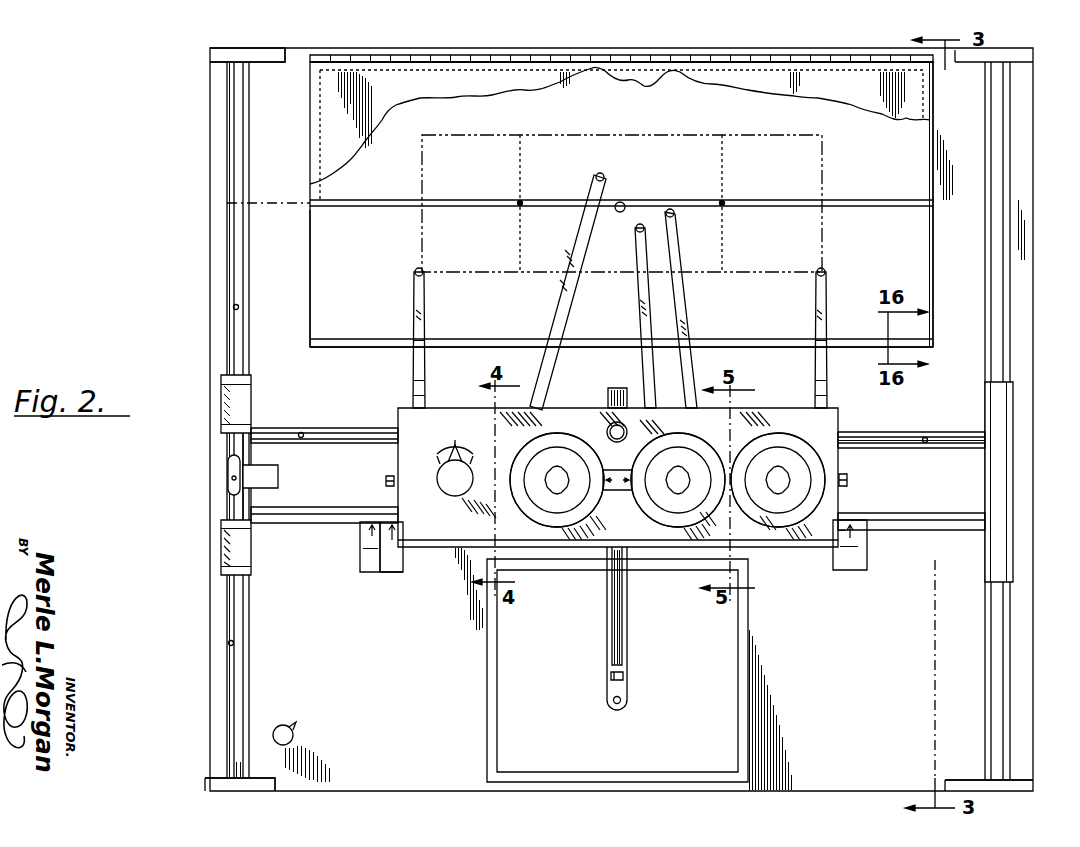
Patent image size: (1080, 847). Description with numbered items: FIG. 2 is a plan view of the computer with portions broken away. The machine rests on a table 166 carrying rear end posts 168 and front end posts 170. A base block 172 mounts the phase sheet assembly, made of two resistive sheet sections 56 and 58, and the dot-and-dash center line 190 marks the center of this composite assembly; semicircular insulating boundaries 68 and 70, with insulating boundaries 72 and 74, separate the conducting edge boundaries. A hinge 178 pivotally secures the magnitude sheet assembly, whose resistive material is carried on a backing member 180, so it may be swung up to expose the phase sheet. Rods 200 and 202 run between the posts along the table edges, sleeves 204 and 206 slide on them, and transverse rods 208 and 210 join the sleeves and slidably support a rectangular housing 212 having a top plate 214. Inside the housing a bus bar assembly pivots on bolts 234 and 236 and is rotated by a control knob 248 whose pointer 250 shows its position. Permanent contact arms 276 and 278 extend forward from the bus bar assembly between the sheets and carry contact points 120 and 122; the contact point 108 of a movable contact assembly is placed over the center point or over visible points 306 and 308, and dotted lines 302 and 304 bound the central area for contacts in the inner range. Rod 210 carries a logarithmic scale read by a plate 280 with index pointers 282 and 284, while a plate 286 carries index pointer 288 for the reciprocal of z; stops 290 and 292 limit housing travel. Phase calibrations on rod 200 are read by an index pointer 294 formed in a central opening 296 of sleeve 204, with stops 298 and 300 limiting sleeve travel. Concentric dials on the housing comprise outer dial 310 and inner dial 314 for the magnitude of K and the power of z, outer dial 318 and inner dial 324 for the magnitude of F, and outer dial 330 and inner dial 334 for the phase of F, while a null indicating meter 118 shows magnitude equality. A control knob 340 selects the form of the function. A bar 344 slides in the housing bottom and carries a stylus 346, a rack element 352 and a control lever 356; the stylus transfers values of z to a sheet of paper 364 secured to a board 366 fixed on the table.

The resistive sheet section 56 is at (912, 145).
The resistive sheet section 58 is at (924, 259).
The semicircular insulating boundary 68 is at (622, 70).
The semicircular insulating boundary 70 is at (620, 202).
The insulating boundary 72 is at (621, 223).
The insulating boundary 74 is at (634, 338).
The contact point 108 is at (600, 174).
The null indicating meter 118 is at (626, 432).
The permanent contact element 120 is at (414, 278).
The permanent contact element 122 is at (826, 274).
The table 166 is at (224, 100).
The rear end posts 168 is at (232, 54).
The front end posts 170 is at (216, 786).
The base block 172 is at (318, 232).
The hinge 178 is at (482, 60).
The backing member 180 is at (326, 96).
The center line 190 is at (316, 206).
The rod 200 is at (230, 252).
The rod 202 is at (1010, 326).
The sleeve 204 is at (224, 511).
The sleeve 206 is at (1012, 510).
The transverse rod 208 is at (898, 448).
The transverse rod 210 is at (962, 514).
The rectangular housing 212 is at (382, 413).
The top plate 214 is at (447, 550).
The pivot bolt 234 is at (386, 483).
The pivot bolt 236 is at (846, 482).
The control knob 248 is at (452, 490).
The pointer 250 is at (450, 454).
The permanent contact arm 276 is at (413, 356).
The permanent contact arm 278 is at (815, 364).
The plate 280 is at (398, 576).
The index pointer 282 is at (376, 575).
The second index pointer 284 is at (362, 545).
The plate 286 is at (850, 572).
The index pointer 288 is at (855, 532).
The stop 290 is at (303, 432).
The stop 292 is at (926, 437).
The index pointer 294 is at (236, 478).
The central opening 296 is at (224, 466).
The stop 298 is at (228, 642).
The stop 300 is at (233, 307).
The dotted line 302 is at (520, 165).
The dotted line 304 is at (722, 175).
The visible point 306 is at (518, 205).
The visible point 308 is at (724, 205).
The outer dial 310 is at (802, 454).
The inner dial 314 is at (770, 500).
The outer dial 318 is at (704, 454).
The inner dial 324 is at (665, 500).
The outer dial 330 is at (572, 444).
The inner dial 334 is at (548, 500).
The control knob 340 is at (294, 736).
The bar 344 is at (628, 697).
The stylus 346 is at (612, 702).
The rack element 352 is at (621, 620).
The control lever 356 is at (624, 676).
The sheet of paper 364 is at (502, 676).
The board 366 is at (487, 712).